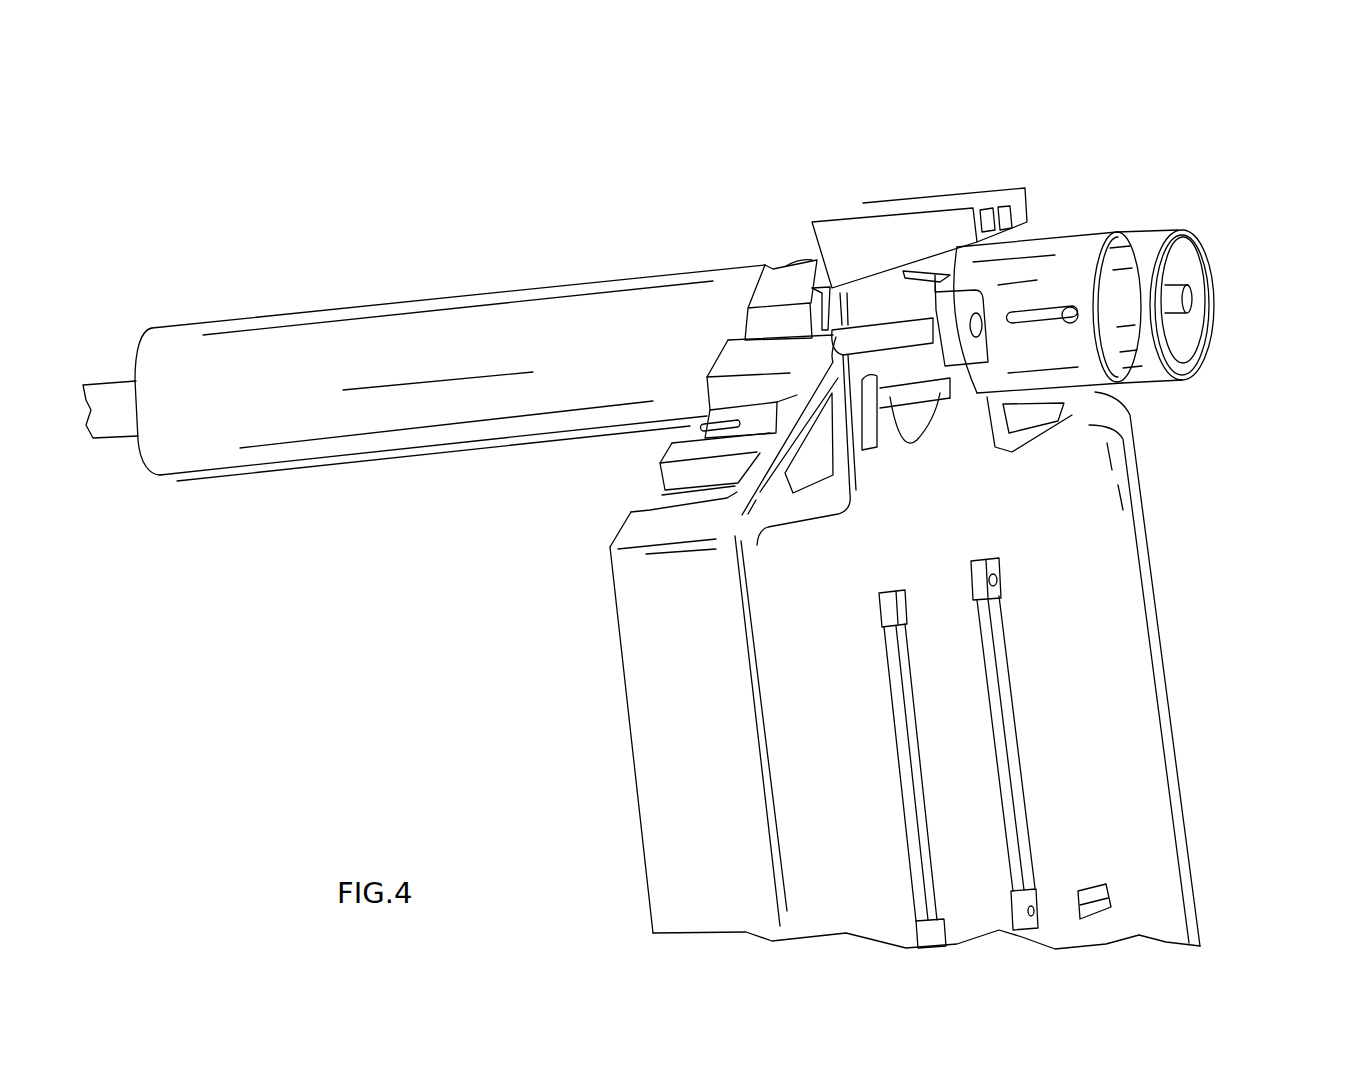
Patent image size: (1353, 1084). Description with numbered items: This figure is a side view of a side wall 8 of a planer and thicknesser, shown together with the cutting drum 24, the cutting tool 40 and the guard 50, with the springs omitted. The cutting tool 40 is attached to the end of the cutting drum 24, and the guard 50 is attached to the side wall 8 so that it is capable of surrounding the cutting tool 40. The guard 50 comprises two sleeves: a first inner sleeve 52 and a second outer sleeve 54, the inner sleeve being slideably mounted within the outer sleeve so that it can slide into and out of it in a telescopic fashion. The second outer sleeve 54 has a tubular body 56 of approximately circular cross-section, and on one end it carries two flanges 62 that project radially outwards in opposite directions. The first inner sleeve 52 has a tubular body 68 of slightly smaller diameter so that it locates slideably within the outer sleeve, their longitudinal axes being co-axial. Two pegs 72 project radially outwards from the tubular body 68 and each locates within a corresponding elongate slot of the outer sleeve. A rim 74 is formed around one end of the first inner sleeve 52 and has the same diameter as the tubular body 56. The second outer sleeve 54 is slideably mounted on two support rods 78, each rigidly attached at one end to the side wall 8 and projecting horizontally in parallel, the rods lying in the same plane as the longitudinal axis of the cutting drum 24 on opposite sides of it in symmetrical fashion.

The side wall 8 is at (1058, 660).
The cutting drum 24 is at (370, 412).
The cutting tool 40 is at (1192, 297).
The guard 50 is at (1093, 157).
The first inner sleeve 52 is at (1150, 212).
The second outer sleeve 54 is at (1043, 212).
The tubular body 56 is at (1040, 370).
The flanges 62 is at (945, 337).
The tubular body 68 is at (1145, 362).
The pegs 72 is at (1147, 382).
The rim 74 is at (1167, 373).
The support rods 78 is at (912, 333).